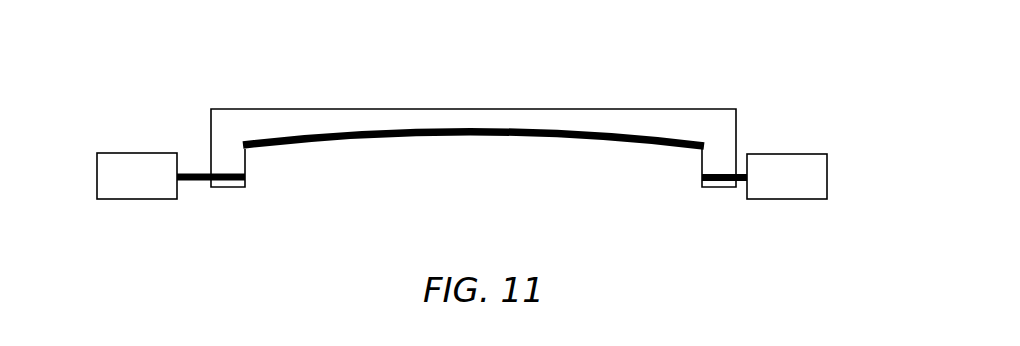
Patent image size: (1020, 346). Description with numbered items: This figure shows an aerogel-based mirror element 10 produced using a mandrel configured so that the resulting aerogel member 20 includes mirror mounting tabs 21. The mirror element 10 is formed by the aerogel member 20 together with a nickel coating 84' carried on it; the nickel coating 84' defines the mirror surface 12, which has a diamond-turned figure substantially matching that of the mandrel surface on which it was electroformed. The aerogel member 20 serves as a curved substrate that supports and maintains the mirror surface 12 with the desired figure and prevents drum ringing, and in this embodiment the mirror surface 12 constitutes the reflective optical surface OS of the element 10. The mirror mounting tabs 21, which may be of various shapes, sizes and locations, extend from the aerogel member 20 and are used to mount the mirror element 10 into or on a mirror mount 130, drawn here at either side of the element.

The aerogel-based mirror element 10 is at (669, 86).
The aerogel member 20 is at (260, 127).
The nickel coating 84' is at (473, 114).
The mirror surface 12 is at (494, 158).
The reflective optical surface OS is at (443, 153).
The mirror mounting tabs 21 is at (231, 188).
The mirror mount 130 is at (133, 144).